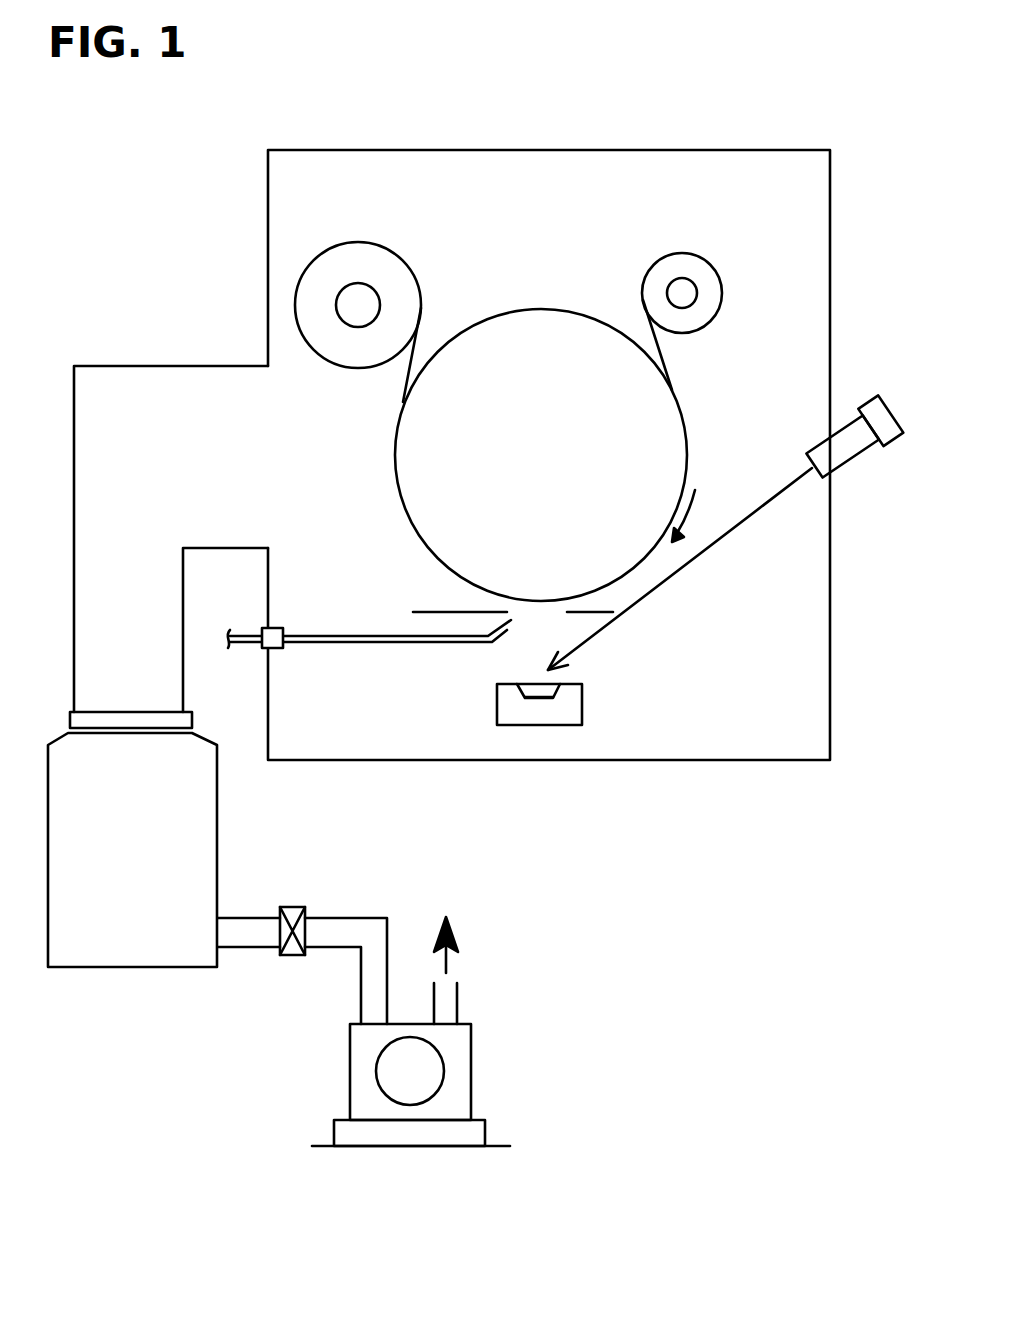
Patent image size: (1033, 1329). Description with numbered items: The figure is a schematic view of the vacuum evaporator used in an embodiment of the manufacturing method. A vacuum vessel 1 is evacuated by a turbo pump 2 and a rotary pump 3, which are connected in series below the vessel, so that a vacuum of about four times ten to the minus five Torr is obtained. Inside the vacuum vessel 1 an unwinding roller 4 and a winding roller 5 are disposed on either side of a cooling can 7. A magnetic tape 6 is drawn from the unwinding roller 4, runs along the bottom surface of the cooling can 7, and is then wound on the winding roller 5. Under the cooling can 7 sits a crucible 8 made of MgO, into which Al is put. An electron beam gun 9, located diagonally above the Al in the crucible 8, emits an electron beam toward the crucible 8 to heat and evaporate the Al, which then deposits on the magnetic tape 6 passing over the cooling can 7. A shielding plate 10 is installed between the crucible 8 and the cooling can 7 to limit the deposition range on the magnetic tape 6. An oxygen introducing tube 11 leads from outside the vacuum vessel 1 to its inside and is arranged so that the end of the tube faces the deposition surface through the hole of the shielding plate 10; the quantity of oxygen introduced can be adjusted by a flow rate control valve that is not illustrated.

The vacuum vessel 1 is at (620, 150).
The turbo pump 2 is at (145, 968).
The rotary pump 3 is at (471, 1057).
The unwinding roller 4 is at (705, 262).
The winding roller 5 is at (388, 243).
The magnetic tape 6 is at (662, 362).
The cooling can 7 is at (535, 310).
The crucible 8 is at (505, 710).
The electron beam gun 9 is at (857, 455).
The shielding plate 10 is at (425, 612).
The oxygen introducing tube 11 is at (333, 643).
The element Al is at (557, 683).